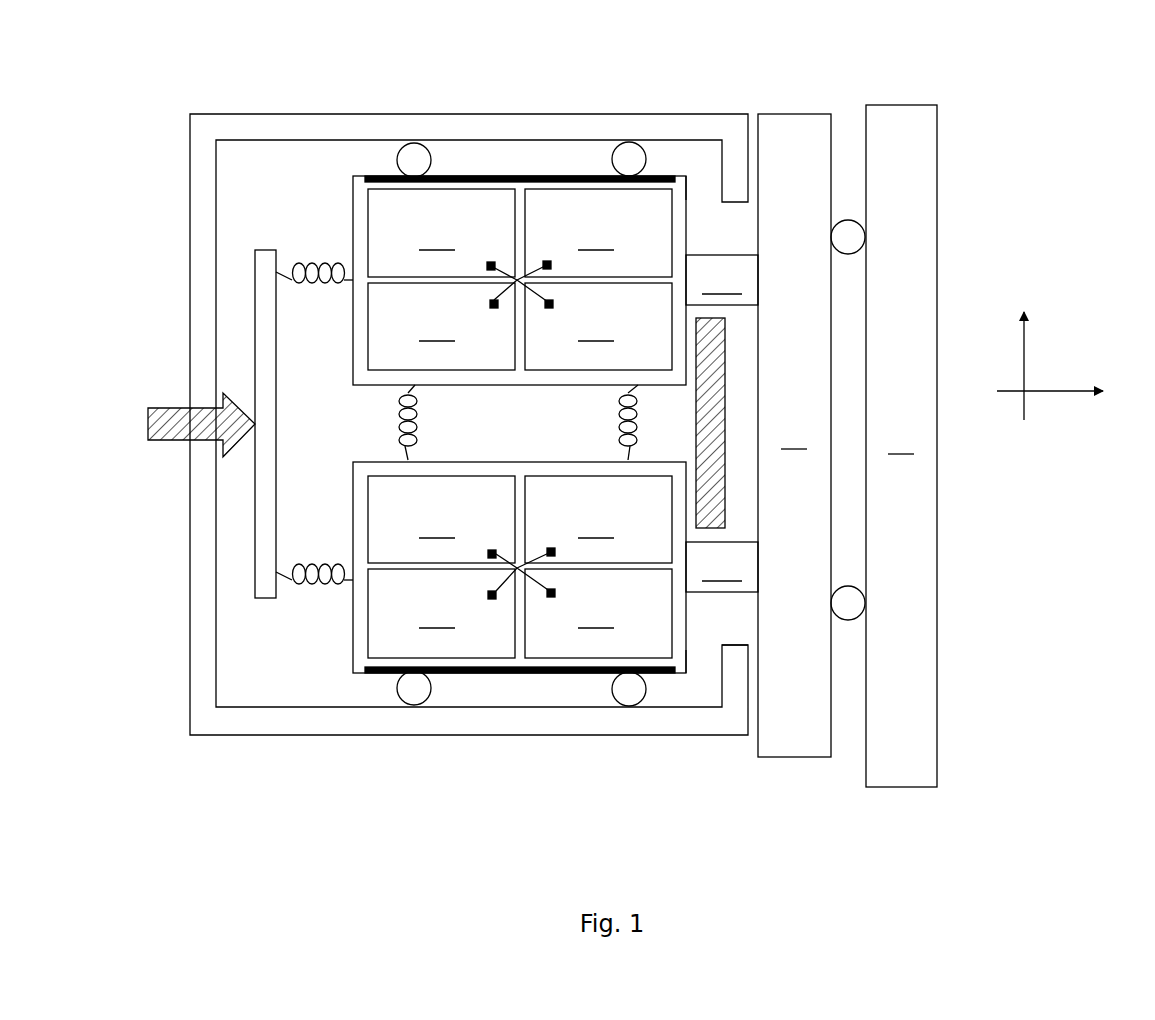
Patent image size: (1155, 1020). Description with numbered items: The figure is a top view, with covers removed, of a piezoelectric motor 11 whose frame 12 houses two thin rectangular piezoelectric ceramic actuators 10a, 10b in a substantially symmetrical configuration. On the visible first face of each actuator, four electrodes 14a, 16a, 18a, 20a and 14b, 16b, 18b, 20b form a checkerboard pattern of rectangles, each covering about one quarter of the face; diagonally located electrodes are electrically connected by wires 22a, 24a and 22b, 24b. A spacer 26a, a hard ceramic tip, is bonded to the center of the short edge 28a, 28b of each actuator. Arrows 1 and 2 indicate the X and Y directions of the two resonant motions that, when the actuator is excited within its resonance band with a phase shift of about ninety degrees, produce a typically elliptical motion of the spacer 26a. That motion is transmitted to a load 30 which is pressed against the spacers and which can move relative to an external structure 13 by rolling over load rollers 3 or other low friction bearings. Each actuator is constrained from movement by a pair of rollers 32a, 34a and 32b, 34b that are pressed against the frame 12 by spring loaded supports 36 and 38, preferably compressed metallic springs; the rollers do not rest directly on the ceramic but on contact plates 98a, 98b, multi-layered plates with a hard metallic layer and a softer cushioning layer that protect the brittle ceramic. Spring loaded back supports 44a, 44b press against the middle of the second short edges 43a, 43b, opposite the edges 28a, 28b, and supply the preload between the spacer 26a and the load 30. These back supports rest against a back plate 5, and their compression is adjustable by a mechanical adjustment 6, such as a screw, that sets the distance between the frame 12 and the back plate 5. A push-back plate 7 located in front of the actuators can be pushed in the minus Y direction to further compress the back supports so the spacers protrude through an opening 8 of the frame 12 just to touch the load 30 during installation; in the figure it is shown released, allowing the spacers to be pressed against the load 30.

The arrow 1 is at (1025, 328).
The arrow 2 is at (1092, 390).
The load rollers 3 is at (866, 240).
The back plate 5 is at (255, 278).
The mechanical adjustment 6 is at (170, 442).
The push-back plate 7 is at (726, 382).
The opening 8 is at (724, 645).
The piezoelectric ceramic actuator 10a is at (480, 211).
The piezoelectric ceramic actuator 10b is at (481, 621).
The piezoelectric motor 11 is at (143, 100).
The frame 12 is at (258, 735).
The external structure 13 is at (901, 446).
The electrode 14a is at (598, 233).
The electrode 14b is at (598, 519).
The electrode 16a is at (598, 326).
The electrode 16b is at (598, 613).
The electrode 18a is at (441, 233).
The electrode 18b is at (441, 519).
The electrode 20a is at (441, 326).
The electrode 20b is at (441, 613).
The wire 22a is at (548, 262).
The wire 22b is at (551, 551).
The wire 24a is at (491, 262).
The wire 24b is at (493, 550).
The spacer 26a is at (722, 423).
The short edge 28a is at (690, 178).
The short edge 28b is at (690, 670).
The load 30 is at (794, 435).
The roller 32a is at (626, 142).
The roller 32b is at (628, 706).
The roller 34a is at (412, 143).
The roller 34b is at (415, 705).
The spring loaded support 36 is at (614, 430).
The spring loaded support 38 is at (420, 400).
The second short edge 43a is at (353, 200).
The second short edge 43b is at (353, 655).
The spring loaded back support 44a is at (322, 283).
The spring loaded back support 44b is at (322, 565).
The contact plate 98a is at (378, 176).
The contact plate 98b is at (545, 673).